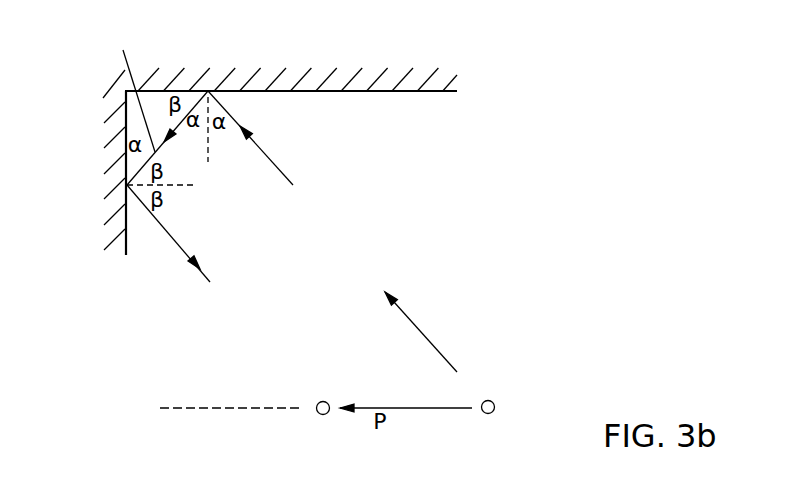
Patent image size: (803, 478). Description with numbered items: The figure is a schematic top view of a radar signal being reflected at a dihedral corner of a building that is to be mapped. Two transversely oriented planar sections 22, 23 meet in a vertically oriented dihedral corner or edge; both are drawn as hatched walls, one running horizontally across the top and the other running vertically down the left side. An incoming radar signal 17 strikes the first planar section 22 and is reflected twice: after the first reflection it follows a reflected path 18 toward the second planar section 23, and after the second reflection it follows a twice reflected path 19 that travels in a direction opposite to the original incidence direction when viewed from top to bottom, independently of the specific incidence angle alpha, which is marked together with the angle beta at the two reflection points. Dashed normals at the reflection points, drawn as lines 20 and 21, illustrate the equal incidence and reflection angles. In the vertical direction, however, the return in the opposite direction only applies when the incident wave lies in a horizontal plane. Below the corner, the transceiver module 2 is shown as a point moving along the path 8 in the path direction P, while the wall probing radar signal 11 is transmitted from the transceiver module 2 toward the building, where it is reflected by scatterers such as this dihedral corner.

The transceiver module 2 is at (503, 398).
The path 8 is at (243, 408).
The wall probing radar signal 11 is at (421, 332).
The incoming radar signal 17 is at (272, 160).
The reflected path 18 is at (127, 90).
The twice reflected path 19 is at (173, 243).
The surface normal 20 is at (210, 148).
The surface normal 21 is at (182, 193).
The planar section 22 is at (260, 85).
The planar section 23 is at (123, 160).